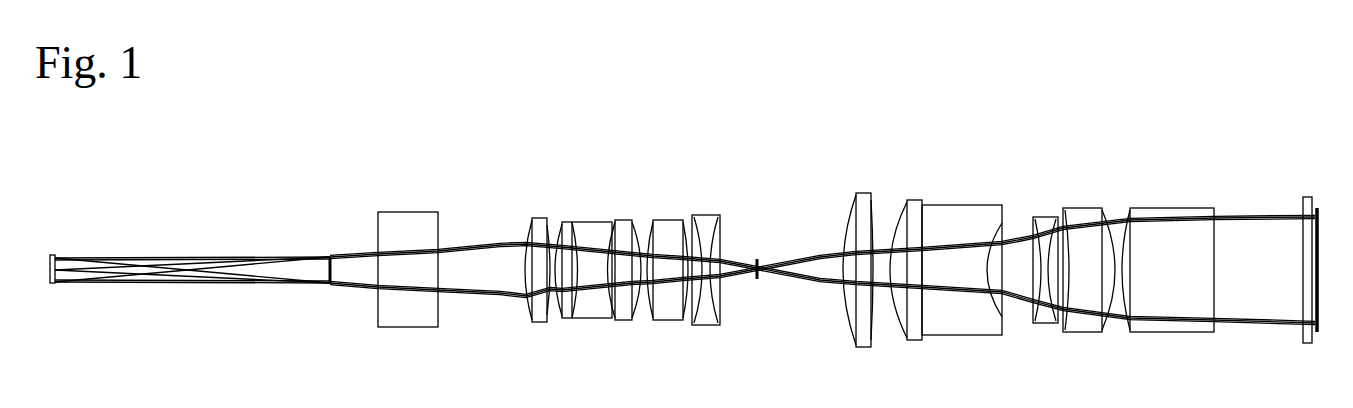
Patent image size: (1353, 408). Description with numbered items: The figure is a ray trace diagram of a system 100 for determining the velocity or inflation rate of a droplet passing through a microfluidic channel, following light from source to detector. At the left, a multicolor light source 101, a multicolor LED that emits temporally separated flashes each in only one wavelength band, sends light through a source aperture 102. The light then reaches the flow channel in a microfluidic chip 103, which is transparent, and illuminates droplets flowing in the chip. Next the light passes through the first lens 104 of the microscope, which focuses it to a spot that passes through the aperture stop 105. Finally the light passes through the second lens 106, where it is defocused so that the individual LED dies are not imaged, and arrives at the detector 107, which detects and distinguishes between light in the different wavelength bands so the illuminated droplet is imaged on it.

The system 100 is at (1139, 73).
The multicolor light source 101 is at (52, 256).
The source aperture 102 is at (328, 270).
The microfluidic chip 103 is at (408, 212).
The first lens 104 is at (735, 212).
The aperture stop 105 is at (758, 258).
The second lens 106 is at (1232, 210).
The detector 107 is at (1316, 181).